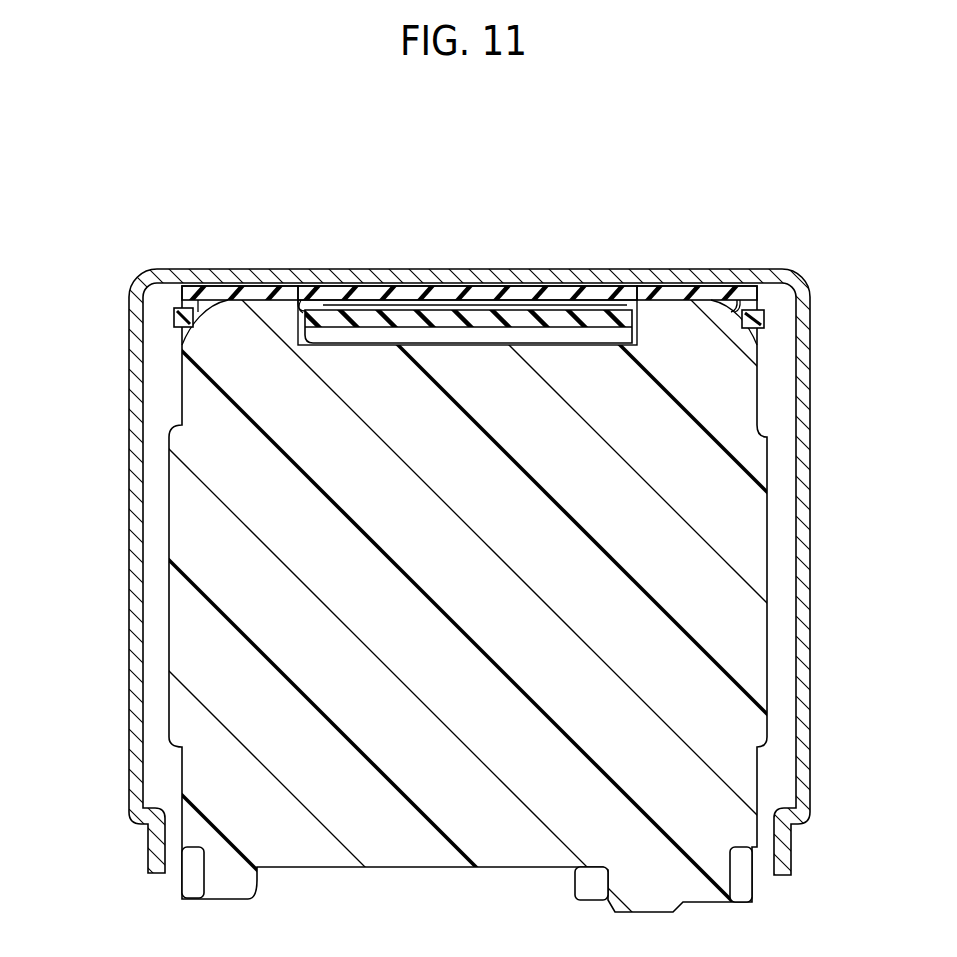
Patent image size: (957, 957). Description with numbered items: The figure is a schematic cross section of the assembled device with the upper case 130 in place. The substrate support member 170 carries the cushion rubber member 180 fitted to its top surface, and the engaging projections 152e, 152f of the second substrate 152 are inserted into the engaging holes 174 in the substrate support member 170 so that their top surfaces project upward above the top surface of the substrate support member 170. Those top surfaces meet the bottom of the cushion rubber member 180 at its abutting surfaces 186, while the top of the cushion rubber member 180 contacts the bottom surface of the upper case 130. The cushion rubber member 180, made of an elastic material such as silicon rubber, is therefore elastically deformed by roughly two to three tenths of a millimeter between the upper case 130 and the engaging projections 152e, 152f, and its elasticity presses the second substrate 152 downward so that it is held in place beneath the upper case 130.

The upper case 130 is at (800, 413).
The second substrate 152 is at (192, 530).
The engaging projection 152e is at (247, 316).
The engaging projection 152f is at (672, 316).
The substrate support member 170 is at (600, 316).
The engaging hole 174 is at (308, 300).
The cushion rubber member 180 is at (373, 300).
The abutting surface 186 is at (183, 345).